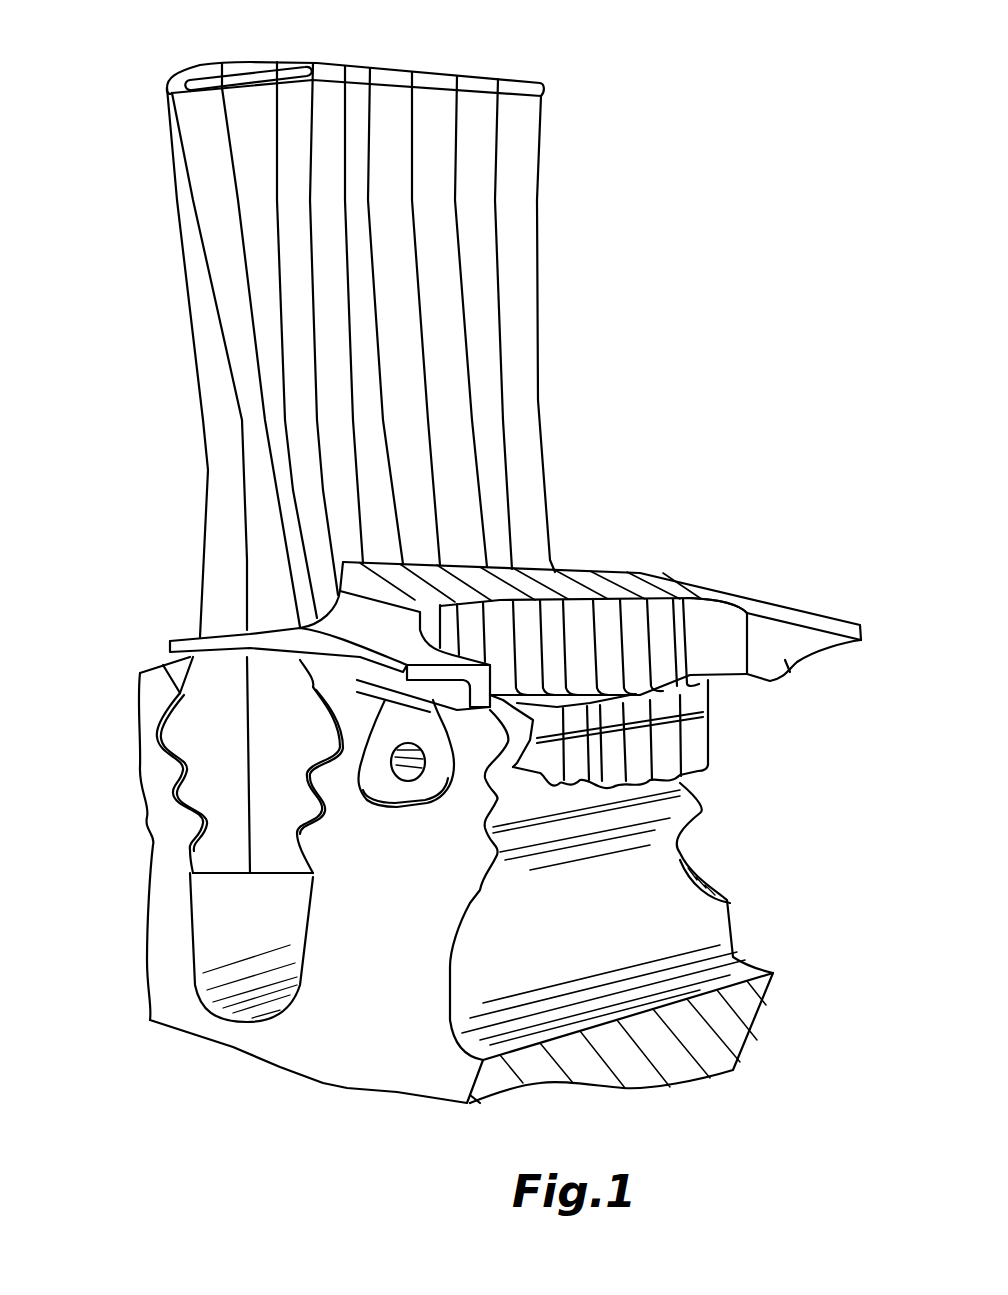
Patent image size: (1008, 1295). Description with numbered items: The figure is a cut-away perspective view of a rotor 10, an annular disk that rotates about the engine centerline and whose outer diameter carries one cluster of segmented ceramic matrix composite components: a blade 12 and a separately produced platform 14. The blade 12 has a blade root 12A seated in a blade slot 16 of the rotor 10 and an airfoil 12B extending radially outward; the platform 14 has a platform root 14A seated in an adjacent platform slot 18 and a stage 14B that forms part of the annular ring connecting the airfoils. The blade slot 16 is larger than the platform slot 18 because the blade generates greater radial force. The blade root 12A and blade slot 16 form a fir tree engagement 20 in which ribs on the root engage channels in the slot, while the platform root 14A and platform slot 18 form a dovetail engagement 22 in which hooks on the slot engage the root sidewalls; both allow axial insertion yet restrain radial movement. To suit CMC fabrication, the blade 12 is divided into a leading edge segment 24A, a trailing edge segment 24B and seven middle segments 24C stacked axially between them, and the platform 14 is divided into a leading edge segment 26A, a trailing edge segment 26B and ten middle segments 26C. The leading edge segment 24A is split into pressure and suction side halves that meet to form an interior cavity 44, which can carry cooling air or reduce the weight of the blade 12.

The rotor 10 is at (400, 1062).
The blade 12 is at (535, 205).
The blade root 12A is at (290, 718).
The airfoil 12B is at (217, 400).
The platform 14 is at (748, 588).
The platform root 14A is at (700, 748).
The stage 14B is at (793, 650).
The blade slot 16 is at (193, 940).
The platform slot 18 is at (390, 805).
The fir tree engagement 20 is at (165, 817).
The dovetail engagement 22 is at (470, 785).
The leading edge segment 24A is at (172, 199).
The trailing edge segment 24B is at (528, 130).
The middle segments 24C is at (330, 62).
The leading edge segment 26A is at (177, 637).
The trailing edge segment 26B is at (683, 587).
The middle segments 26C is at (580, 565).
The interior cavity 44 is at (248, 72).